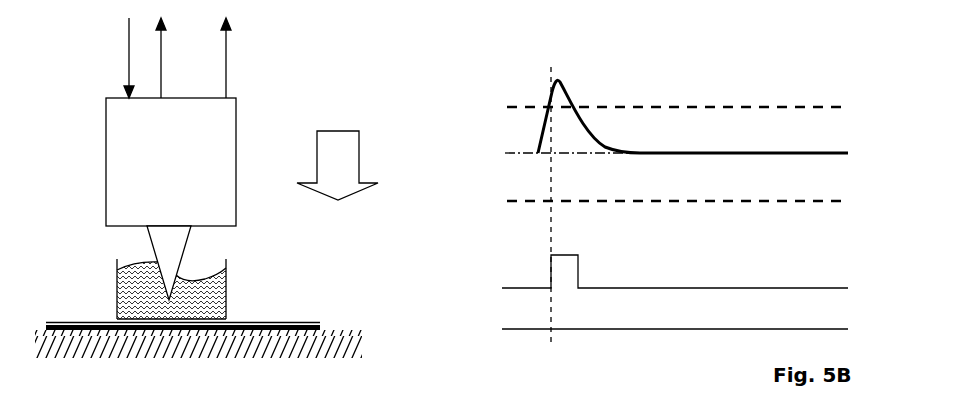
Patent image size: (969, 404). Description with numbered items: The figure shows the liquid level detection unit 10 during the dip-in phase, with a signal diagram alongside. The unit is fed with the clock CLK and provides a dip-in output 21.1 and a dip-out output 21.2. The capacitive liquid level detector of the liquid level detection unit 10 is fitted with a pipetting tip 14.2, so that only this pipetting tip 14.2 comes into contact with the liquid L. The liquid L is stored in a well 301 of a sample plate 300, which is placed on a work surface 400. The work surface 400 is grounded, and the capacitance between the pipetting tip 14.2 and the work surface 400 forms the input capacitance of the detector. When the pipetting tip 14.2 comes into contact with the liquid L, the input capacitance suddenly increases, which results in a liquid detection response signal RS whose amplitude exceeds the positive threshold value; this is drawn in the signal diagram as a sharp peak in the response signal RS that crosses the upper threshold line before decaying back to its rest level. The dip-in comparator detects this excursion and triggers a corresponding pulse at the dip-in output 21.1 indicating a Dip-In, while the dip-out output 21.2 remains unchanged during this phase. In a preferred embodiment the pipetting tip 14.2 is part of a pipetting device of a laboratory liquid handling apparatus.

The liquid level detection unit 10 is at (184, 170).
The pipetting tip 14.2 is at (168, 258).
The dip-in output 21.1 is at (502, 158).
The dip-out output 21.2 is at (534, 178).
The sample plate 300 is at (62, 322).
The well 301 is at (226, 272).
The work surface 400 is at (305, 350).
The liquid L is at (160, 310).
The clock CLK is at (101, 58).
The liquid detection response signal RS is at (661, 121).